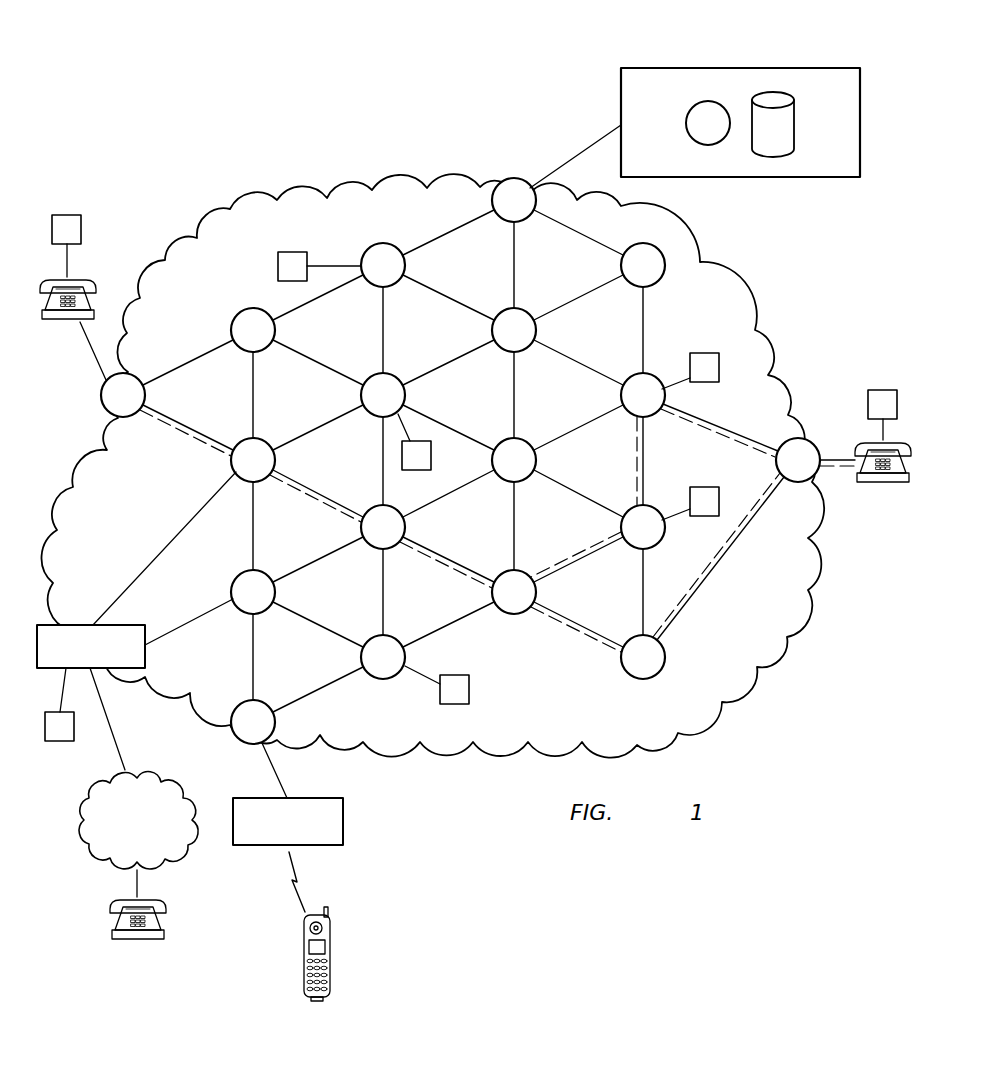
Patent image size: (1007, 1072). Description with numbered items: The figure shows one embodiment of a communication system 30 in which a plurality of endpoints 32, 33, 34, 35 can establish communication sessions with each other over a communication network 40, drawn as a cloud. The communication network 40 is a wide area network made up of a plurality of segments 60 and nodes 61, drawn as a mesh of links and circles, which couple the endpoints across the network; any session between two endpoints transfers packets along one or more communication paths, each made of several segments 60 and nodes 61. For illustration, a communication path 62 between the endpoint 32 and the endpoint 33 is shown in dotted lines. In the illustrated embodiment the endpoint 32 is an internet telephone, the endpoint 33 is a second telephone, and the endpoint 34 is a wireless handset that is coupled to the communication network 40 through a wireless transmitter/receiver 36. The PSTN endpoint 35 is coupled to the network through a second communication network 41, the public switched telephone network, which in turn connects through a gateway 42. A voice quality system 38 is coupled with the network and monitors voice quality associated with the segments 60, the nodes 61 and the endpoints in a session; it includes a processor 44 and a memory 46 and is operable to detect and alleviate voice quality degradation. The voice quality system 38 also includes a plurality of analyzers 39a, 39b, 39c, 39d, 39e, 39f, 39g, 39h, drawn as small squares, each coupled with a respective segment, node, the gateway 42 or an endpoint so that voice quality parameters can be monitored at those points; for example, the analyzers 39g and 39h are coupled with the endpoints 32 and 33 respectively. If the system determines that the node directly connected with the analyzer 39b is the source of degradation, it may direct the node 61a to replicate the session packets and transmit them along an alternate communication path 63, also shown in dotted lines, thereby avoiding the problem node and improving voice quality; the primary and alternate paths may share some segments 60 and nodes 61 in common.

The communication system 30 is at (210, 129).
The communication network 40 is at (300, 181).
The segments 60 is at (450, 296).
The nodes 61 is at (232, 328).
The node 61a is at (491, 594).
The communication path 62 is at (205, 426).
The communication path 63 is at (728, 563).
The voice quality system 38 is at (752, 68).
The processor 44 is at (686, 126).
The memory 46 is at (796, 122).
The analyzer 39a is at (278, 266).
The analyzer 39b is at (704, 353).
The analyzer 39c is at (697, 516).
The analyzer 39d is at (469, 692).
The analyzer 39e is at (431, 452).
The analyzer 39f is at (58, 742).
The analyzer 39g is at (82, 231).
The analyzer 39h is at (886, 390).
The endpoint 32 is at (57, 322).
The endpoint 33 is at (880, 484).
The endpoint 34 is at (302, 966).
The PSTN endpoint 35 is at (108, 921).
The wireless transmitter/receiver 36 is at (344, 830).
The communication network 41 is at (78, 845).
The gateway 42 is at (82, 625).